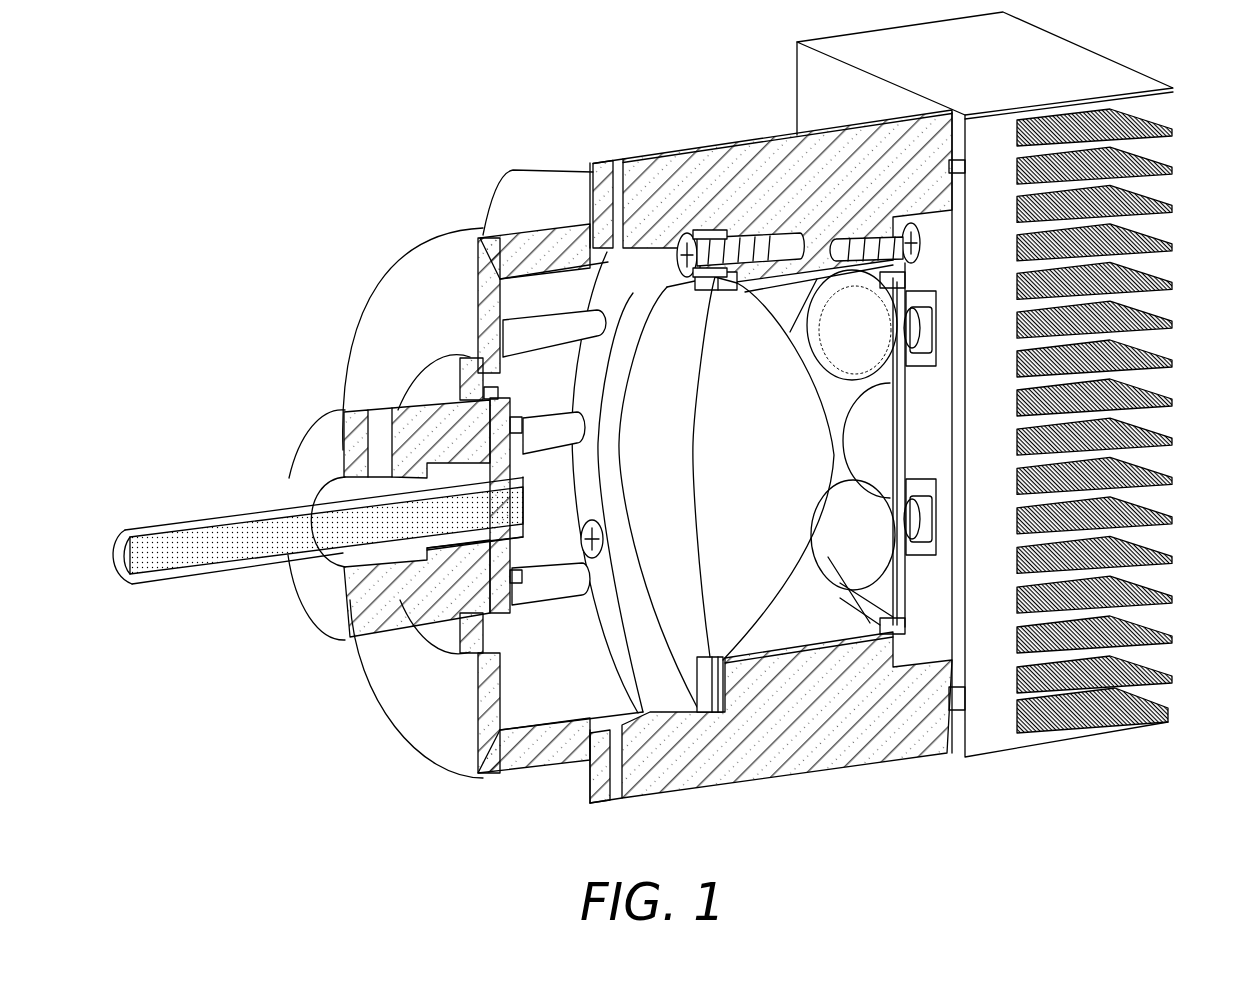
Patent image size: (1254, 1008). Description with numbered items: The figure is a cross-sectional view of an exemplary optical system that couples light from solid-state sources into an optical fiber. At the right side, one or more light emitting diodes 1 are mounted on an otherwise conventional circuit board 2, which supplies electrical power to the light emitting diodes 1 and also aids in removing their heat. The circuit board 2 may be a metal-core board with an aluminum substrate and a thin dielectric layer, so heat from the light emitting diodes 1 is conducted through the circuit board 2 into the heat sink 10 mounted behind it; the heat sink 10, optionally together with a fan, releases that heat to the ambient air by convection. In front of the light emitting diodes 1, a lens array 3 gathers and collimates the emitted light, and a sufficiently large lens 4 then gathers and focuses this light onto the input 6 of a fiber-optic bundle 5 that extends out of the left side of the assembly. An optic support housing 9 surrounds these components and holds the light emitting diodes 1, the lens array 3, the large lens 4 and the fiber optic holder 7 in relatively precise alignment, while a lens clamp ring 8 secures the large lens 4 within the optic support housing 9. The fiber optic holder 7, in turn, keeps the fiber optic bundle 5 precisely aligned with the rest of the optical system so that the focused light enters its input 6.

The light emitting diodes 1 is at (927, 556).
The circuit board 2 is at (950, 388).
The lens array 3 is at (825, 556).
The large lens 4 is at (697, 550).
The fiber-optic bundle 5 is at (165, 585).
The input 6 is at (520, 503).
The fiber optic holder 7 is at (292, 456).
The lens clamp ring 8 is at (659, 277).
The optic support housing 9 is at (763, 136).
The heat sink 10 is at (1088, 44).